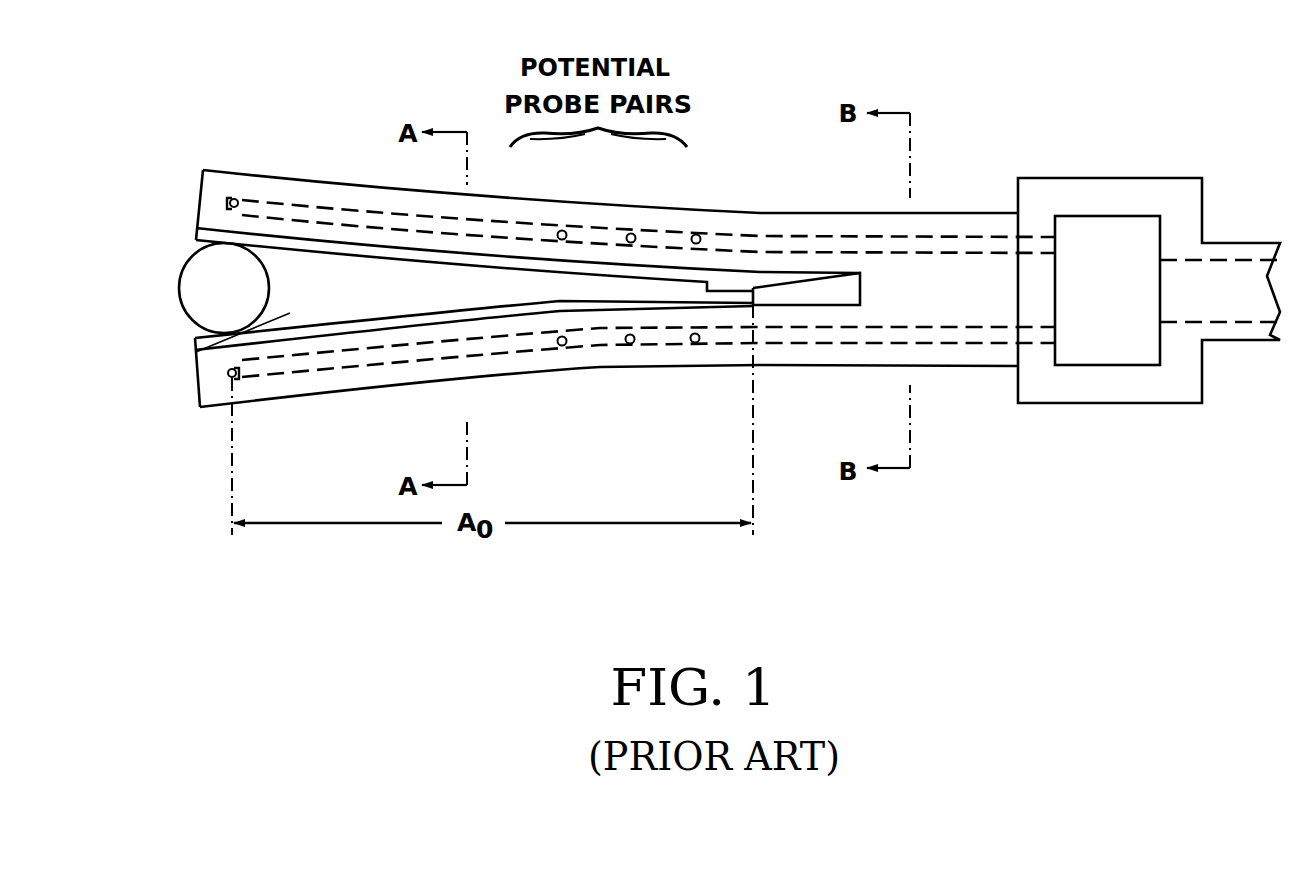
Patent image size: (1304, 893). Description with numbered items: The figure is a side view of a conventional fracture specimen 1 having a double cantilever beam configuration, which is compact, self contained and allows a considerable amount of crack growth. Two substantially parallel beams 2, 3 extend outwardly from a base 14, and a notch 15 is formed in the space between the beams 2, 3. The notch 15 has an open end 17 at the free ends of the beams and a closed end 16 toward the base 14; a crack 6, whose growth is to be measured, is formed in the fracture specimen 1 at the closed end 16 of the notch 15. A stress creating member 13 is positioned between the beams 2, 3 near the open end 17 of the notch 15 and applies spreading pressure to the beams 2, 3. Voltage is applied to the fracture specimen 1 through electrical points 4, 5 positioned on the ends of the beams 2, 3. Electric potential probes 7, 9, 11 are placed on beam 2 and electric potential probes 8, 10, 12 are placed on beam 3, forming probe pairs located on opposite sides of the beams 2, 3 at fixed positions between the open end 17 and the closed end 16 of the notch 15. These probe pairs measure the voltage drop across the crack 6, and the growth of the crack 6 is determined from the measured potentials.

The fracture specimen 1 is at (225, 102).
The beam 2 is at (332, 184).
The beam 3 is at (338, 383).
The electrical point 4 is at (238, 197).
The electrical point 5 is at (230, 371).
The crack 6 is at (860, 273).
The electric potential probe 7 is at (561, 229).
The electric potential probe 8 is at (561, 347).
The electric potential probe 9 is at (630, 230).
The electric potential probe 10 is at (630, 345).
The electric potential probe 11 is at (693, 231).
The electric potential probe 12 is at (695, 344).
The stress creating member 13 is at (178, 290).
The base 14 is at (1125, 178).
The notch 15 is at (335, 290).
The closed end 16 is at (885, 256).
The open end 17 is at (290, 313).